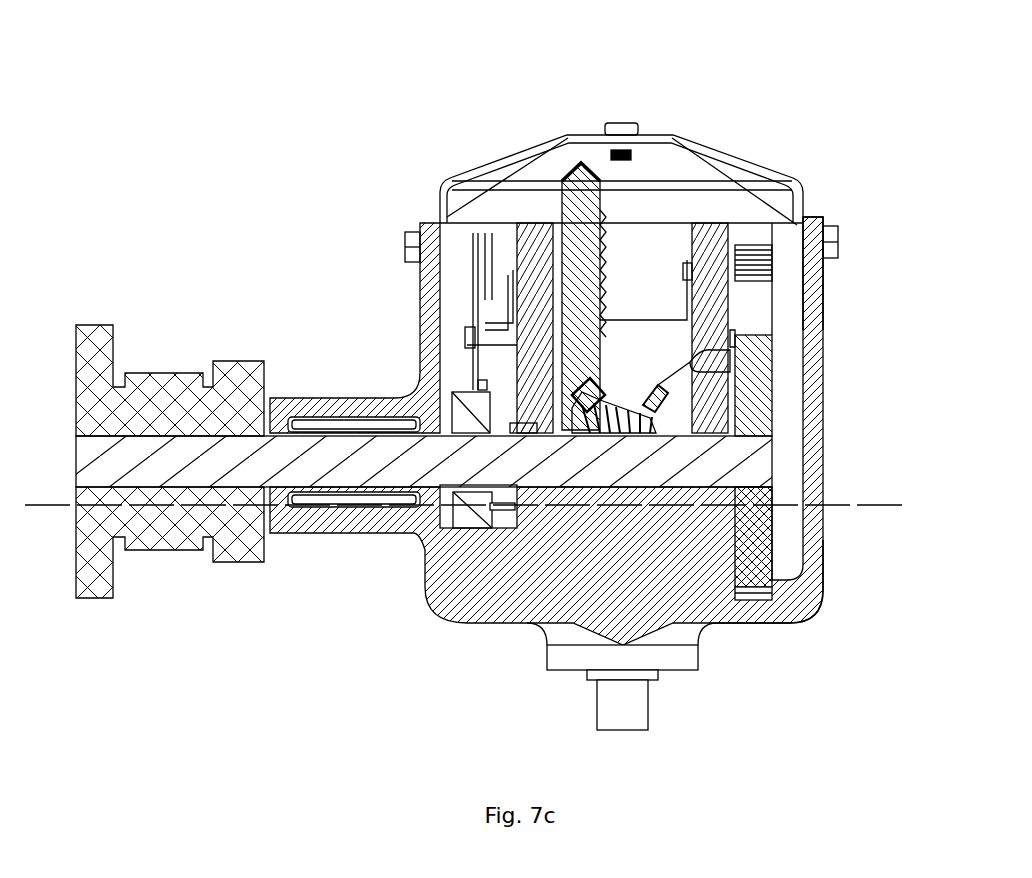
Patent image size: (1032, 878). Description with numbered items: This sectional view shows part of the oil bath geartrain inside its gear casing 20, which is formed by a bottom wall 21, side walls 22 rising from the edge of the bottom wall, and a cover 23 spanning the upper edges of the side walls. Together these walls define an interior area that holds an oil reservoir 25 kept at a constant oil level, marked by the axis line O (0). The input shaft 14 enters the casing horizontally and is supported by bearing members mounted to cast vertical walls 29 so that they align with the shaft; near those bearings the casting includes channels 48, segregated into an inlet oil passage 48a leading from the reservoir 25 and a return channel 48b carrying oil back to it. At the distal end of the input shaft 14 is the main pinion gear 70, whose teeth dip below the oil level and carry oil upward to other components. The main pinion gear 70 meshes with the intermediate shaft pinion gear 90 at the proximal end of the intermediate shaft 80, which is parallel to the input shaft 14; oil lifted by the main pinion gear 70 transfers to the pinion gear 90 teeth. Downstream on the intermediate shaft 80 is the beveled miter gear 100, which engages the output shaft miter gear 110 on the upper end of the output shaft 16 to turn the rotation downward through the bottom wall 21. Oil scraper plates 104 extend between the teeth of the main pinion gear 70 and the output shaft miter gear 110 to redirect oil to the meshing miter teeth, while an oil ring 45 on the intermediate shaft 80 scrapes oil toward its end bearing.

The oil level 0 is at (880, 514).
The input shaft 14 is at (545, 470).
The output shaft 16 is at (633, 715).
The gear casing 20 is at (503, 373).
The bottom wall 21 is at (762, 624).
The side walls 22 is at (823, 290).
The cover 23 is at (665, 124).
The oil reservoir 25 is at (452, 592).
The vertical walls 29 is at (530, 237).
The oil ring 45 is at (460, 304).
The channels 48 is at (358, 403).
The inlet oil passage 48a is at (318, 405).
The return channel 48b is at (442, 512).
The main pinion gear 70 is at (757, 395).
The intermediate shaft 80 is at (657, 295).
The intermediate shaft pinion gear 90 is at (750, 263).
The miter gear 100 is at (580, 163).
The oil scraper plates 104 is at (683, 345).
The output shaft miter gear 110 is at (623, 408).